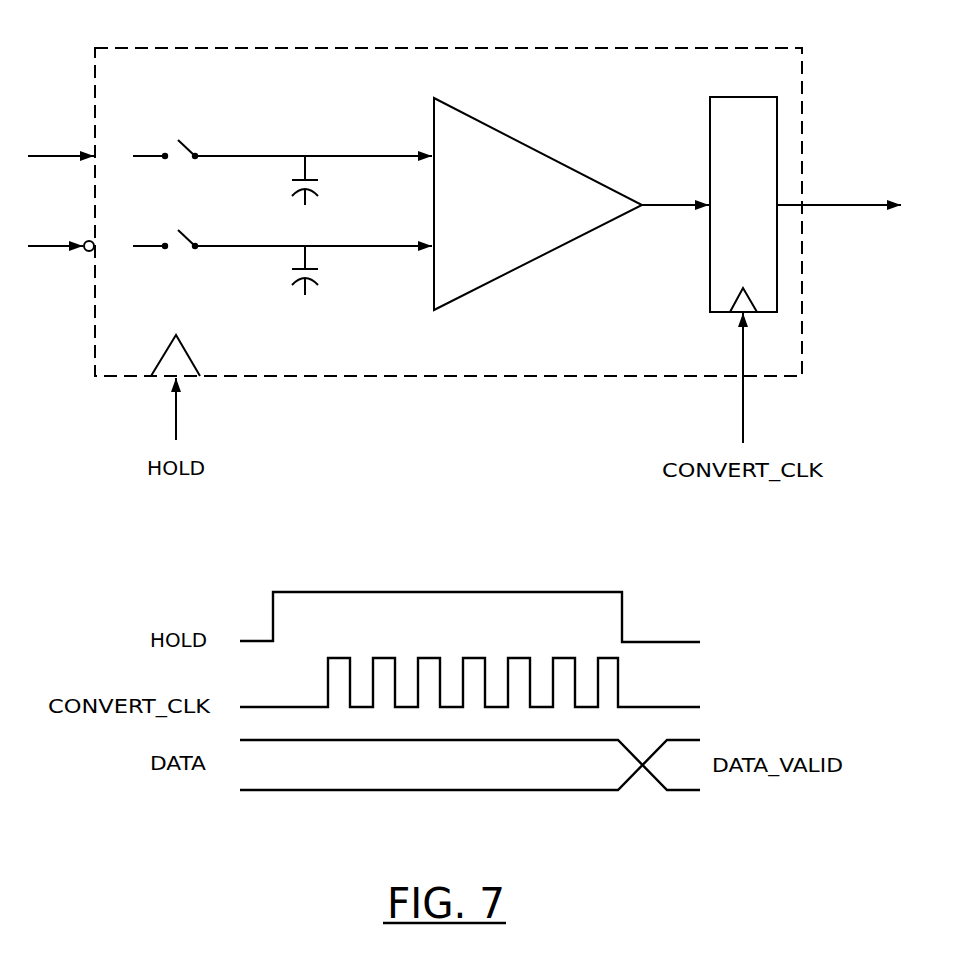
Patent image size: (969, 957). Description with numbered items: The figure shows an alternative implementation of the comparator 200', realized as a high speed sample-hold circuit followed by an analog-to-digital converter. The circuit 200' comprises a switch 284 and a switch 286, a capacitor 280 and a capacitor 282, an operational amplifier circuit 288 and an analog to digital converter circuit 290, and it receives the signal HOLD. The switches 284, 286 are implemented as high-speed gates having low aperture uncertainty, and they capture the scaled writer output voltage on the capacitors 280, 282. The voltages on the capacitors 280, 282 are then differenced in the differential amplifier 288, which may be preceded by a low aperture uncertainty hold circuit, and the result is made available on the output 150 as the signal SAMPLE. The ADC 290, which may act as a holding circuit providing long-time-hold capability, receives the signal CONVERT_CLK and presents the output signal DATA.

The comparator 200' is at (448, 197).
The switch 284 is at (176, 165).
The switch 286 is at (176, 257).
The capacitor 280 is at (292, 188).
The capacitor 282 is at (292, 277).
The operational amplifier circuit 288 is at (477, 113).
The analog to digital converter circuit 290 is at (718, 96).
The output 150 is at (800, 207).